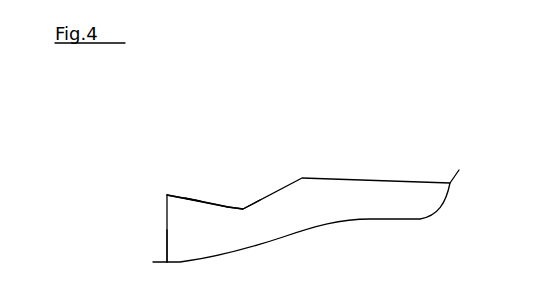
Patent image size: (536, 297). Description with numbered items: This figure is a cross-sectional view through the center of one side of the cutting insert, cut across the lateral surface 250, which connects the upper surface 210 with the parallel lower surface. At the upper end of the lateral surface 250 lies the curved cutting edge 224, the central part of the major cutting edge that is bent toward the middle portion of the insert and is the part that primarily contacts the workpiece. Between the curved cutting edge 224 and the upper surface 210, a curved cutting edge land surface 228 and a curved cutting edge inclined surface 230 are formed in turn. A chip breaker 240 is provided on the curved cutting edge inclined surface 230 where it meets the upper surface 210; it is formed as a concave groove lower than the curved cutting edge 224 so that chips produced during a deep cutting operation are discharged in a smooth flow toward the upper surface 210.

The upper surface 210 is at (310, 178).
The curved cutting edge 224 is at (168, 195).
The curved cutting edge land surface 228 is at (173, 195).
The curved cutting edge inclined surface 230 is at (191, 198).
The chip breaker 240 is at (245, 208).
The lateral surface 250 is at (167, 232).